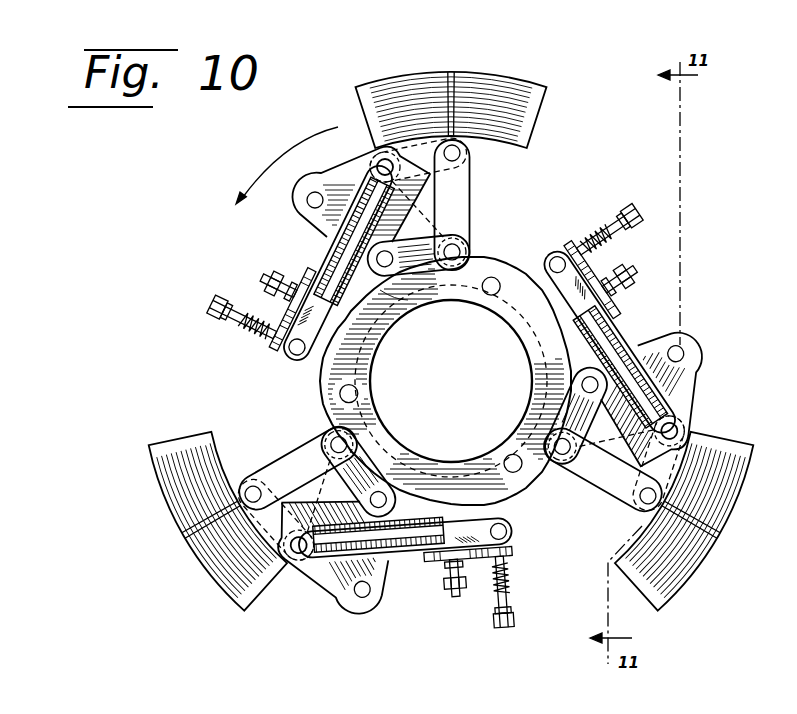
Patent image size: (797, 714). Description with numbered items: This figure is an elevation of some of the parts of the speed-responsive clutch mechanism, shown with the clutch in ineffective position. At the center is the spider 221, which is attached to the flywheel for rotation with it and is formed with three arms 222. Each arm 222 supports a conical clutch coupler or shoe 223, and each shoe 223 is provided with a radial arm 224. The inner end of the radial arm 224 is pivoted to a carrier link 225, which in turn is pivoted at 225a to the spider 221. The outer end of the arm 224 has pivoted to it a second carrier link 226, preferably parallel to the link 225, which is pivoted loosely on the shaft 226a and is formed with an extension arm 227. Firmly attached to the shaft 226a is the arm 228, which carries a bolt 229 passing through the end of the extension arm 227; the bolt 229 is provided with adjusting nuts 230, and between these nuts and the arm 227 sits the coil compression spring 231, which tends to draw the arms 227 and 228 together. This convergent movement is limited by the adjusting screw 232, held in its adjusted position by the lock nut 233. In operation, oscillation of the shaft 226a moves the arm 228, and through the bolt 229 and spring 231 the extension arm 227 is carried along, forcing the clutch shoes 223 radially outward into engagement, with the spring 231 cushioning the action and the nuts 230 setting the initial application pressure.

The spider 221 is at (520, 296).
The arms 222 is at (334, 181).
The conical clutch coupler or shoe 223 is at (430, 84).
The radial arm 224 is at (462, 198).
The carrier link 225 is at (420, 270).
The pivot of carrier link on spider 225a is at (394, 270).
The carrier link 226 is at (430, 177).
The shaft 226a is at (377, 160).
The extension arm 227 is at (324, 242).
The arm 228 is at (307, 356).
The bolt 229 is at (281, 352).
The adjusting nuts 230 is at (238, 326).
The coil compression spring 231 is at (256, 335).
The adjusting screw 232 is at (278, 280).
The lock nut 233 is at (297, 272).